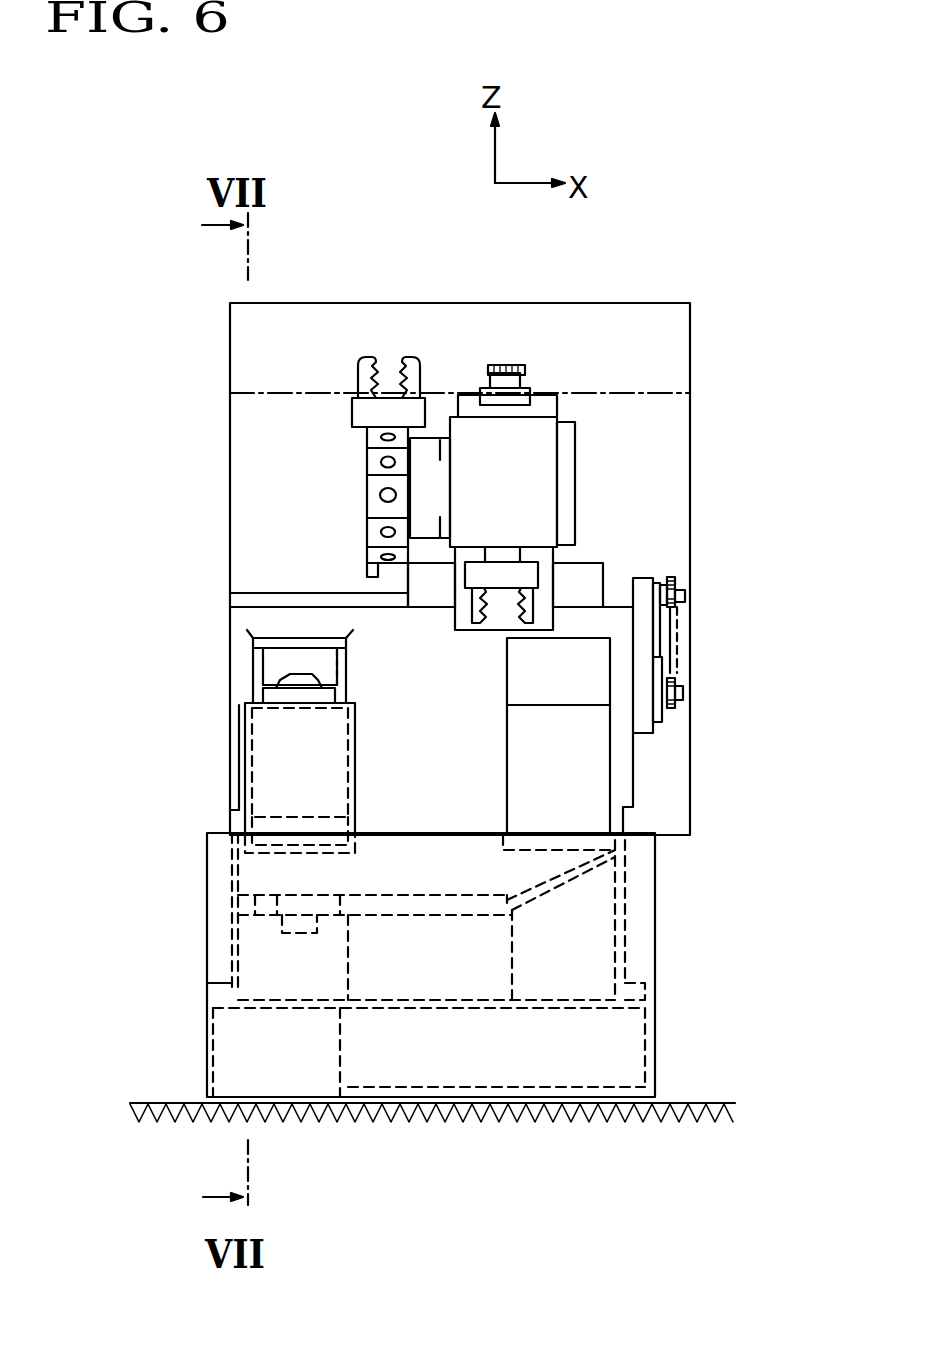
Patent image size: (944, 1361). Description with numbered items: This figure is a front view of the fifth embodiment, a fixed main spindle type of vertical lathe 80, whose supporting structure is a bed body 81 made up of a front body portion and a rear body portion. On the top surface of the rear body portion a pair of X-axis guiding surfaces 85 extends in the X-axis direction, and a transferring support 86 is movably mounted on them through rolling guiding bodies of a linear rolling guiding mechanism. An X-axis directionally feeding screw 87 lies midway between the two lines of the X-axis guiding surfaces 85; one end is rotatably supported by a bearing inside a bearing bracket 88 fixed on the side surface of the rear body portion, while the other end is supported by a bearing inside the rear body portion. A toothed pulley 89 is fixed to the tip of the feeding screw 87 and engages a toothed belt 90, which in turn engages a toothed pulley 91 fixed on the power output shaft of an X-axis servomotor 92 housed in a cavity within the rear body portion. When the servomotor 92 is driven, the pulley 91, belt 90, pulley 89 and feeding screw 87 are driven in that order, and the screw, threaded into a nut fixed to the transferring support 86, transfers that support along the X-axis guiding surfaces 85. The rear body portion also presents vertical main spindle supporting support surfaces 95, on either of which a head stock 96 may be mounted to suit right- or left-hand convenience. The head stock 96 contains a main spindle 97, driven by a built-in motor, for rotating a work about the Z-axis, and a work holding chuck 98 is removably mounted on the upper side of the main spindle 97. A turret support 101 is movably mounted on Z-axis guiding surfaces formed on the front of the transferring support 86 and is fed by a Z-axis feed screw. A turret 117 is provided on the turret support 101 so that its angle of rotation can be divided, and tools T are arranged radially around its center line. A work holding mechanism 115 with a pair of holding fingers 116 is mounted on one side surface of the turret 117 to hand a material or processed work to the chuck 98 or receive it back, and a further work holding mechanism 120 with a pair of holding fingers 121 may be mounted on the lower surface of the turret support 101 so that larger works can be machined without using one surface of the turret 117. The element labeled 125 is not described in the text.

The fixed main spindle type of vertical lathe 80 is at (718, 323).
The bed body 81 is at (667, 908).
The X-axis guiding surfaces 85 is at (265, 600).
The transferring support 86 is at (587, 573).
The X-axis directionally feeding screw 87 is at (660, 581).
The bearing bracket 88 is at (641, 722).
The toothed pulley 89 is at (674, 582).
The toothed belt 90 is at (676, 627).
The toothed pulley 91 is at (674, 695).
The X-axis servomotor 92 is at (662, 720).
The main spindle supporting support surfaces 95 is at (583, 798).
The head stock 96 is at (323, 798).
The main spindle 97 is at (262, 673).
The work holding chuck 98 is at (265, 667).
The turret support 101 is at (528, 513).
The work holding mechanism 115 is at (362, 408).
The holding fingers 116 is at (367, 357).
The turret 117 is at (377, 470).
The work holding mechanism 120 is at (476, 643).
The holding fingers 121 is at (467, 618).
The column 125 is at (596, 325).
The tools T is at (370, 563).